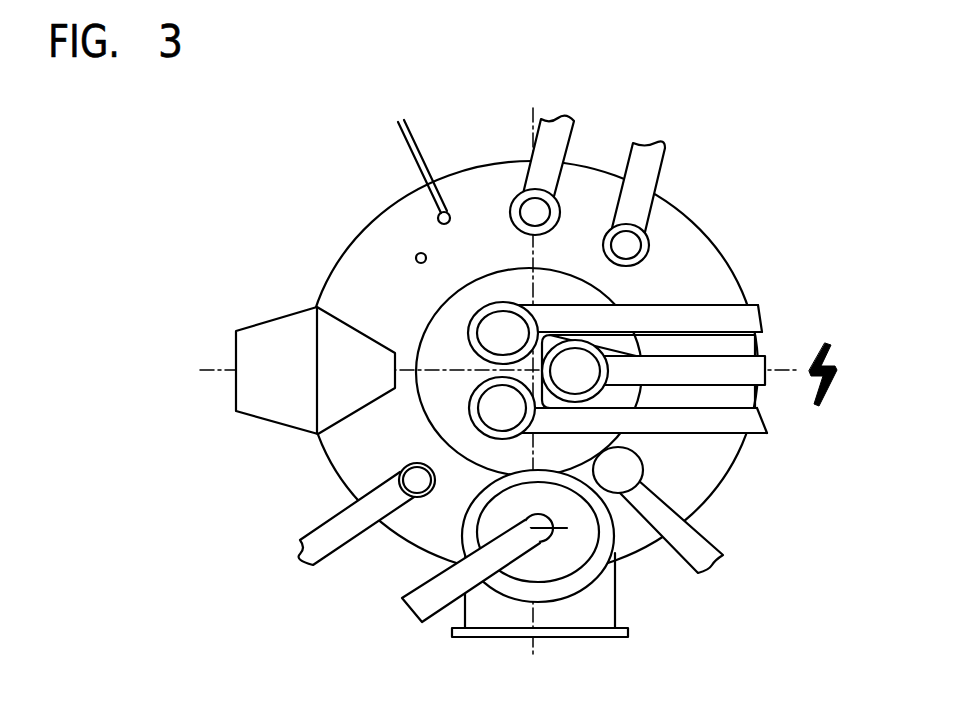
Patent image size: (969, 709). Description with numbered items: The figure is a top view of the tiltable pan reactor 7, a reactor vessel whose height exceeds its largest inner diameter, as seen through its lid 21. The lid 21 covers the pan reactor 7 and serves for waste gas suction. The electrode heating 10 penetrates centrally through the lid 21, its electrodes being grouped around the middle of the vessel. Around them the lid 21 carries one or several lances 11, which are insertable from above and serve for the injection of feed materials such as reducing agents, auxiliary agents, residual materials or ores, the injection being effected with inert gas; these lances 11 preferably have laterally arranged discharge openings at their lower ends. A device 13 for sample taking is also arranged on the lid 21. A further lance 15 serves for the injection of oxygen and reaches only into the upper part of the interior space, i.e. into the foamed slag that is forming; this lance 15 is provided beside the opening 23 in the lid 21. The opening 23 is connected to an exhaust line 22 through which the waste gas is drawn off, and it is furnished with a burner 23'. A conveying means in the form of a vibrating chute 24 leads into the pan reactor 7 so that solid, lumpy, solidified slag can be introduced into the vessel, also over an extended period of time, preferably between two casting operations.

The tiltable pan reactor 7 is at (745, 282).
The electrode heating 10 is at (567, 385).
The lances 11 is at (632, 158).
The device for sample taking 13 is at (410, 152).
The lance 15 is at (328, 538).
The lid 21 is at (677, 250).
The exhaust line 22 is at (603, 607).
The opening 23 is at (561, 536).
The burner 23' is at (471, 599).
The vibrating chute 24 is at (698, 542).